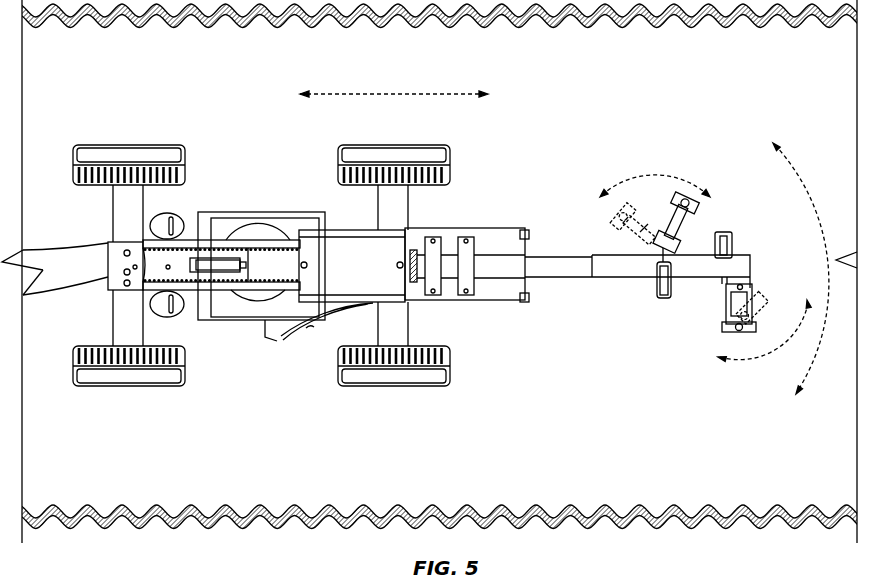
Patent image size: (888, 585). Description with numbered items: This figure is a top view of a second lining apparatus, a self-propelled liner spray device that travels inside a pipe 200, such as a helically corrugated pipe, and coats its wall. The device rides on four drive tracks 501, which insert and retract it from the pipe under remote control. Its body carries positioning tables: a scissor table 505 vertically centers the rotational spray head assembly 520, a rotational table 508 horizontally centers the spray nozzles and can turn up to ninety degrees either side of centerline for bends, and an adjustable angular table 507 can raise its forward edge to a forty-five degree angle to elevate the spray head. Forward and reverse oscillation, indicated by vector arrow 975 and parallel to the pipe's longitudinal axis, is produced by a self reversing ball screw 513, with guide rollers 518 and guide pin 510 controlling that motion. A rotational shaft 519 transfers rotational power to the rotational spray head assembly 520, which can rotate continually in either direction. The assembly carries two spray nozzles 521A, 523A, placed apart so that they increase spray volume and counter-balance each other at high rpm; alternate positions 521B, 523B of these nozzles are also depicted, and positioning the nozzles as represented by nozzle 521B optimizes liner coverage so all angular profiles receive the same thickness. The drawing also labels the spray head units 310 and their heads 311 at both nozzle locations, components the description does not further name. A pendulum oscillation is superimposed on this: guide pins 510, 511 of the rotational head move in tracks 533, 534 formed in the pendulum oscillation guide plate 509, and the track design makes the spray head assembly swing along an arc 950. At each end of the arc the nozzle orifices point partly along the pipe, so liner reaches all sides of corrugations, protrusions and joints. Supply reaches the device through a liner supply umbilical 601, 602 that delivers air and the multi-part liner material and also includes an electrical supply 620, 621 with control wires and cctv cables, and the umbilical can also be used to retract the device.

The pipe 200 is at (466, 505).
The cutting assembly 310 is at (663, 232).
The cutter motor 311 is at (688, 220).
The drive tracks 501 is at (393, 376).
The scissor table 505 is at (322, 215).
The adjustable angular table 507 is at (232, 224).
The rotational table 508 is at (260, 306).
The pendulum oscillation guide plate 509 is at (268, 341).
The guide pin 510 is at (358, 312).
The guide pin 511 is at (166, 267).
The self reversing ball screw 513 is at (236, 266).
The guide rollers 518 is at (523, 230).
The rotational shaft 519 is at (548, 270).
The rotational spray head assembly 520 is at (605, 263).
The spray nozzle 521A is at (690, 245).
The alternate positioning of spray nozzle 521B is at (637, 231).
The spray nozzle 523A is at (730, 324).
The alternate positioning of spray nozzle 523B is at (765, 291).
The track 533 is at (308, 333).
The track 534 is at (172, 316).
The liner supply umbilical 601 is at (63, 241).
The liner supply umbilical 602 is at (62, 286).
The electrical supply 620 is at (150, 292).
The electrical supply 621 is at (181, 234).
The arc 950 is at (822, 254).
The vector arrow 975 is at (395, 95).